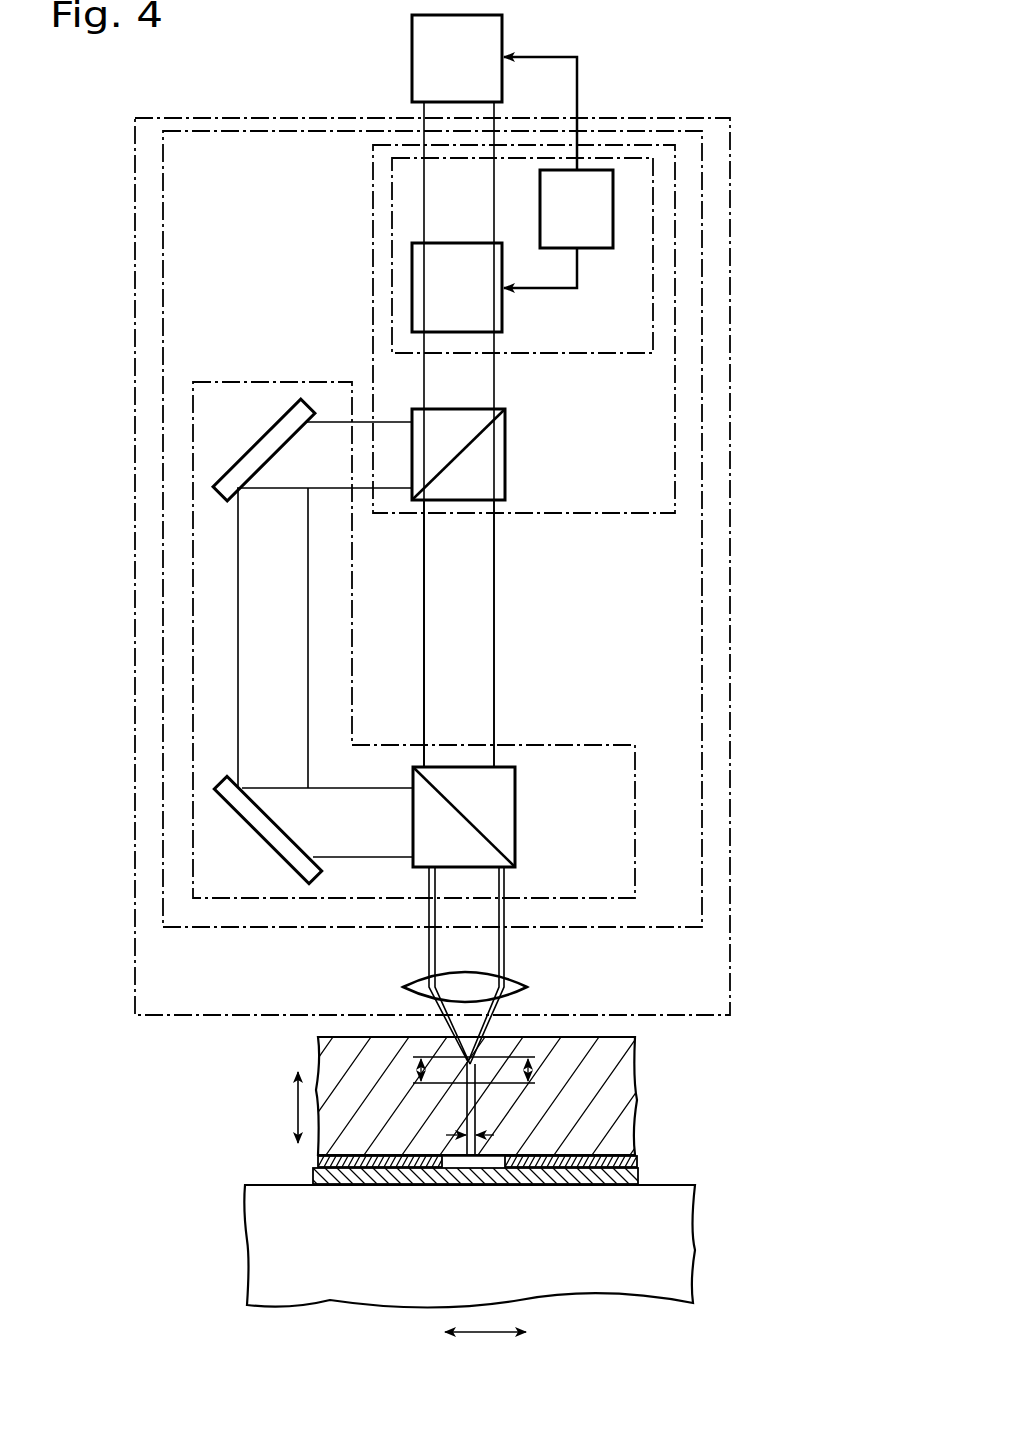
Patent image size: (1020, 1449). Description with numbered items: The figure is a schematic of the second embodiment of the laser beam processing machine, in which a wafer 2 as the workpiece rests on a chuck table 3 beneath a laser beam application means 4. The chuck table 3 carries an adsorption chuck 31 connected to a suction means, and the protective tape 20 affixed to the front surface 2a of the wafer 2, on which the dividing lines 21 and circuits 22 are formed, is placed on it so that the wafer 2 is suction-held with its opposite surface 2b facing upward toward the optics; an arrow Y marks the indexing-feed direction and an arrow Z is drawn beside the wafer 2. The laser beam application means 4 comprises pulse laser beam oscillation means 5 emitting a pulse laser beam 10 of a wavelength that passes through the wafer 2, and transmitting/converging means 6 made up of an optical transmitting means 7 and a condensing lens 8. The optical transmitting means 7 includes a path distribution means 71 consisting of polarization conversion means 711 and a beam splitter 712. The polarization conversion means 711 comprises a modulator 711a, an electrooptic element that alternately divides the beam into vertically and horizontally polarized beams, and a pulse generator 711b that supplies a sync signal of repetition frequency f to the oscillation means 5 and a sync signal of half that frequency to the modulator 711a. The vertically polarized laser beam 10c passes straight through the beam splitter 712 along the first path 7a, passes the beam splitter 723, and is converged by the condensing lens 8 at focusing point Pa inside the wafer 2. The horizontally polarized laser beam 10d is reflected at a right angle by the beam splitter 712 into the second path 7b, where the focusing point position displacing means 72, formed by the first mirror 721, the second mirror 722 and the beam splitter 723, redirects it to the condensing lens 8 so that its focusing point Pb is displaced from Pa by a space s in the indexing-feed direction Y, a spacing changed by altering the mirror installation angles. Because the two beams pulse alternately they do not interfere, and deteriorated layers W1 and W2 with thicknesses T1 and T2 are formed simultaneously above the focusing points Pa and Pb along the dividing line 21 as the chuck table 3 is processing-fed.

The wafer 2 is at (623, 1092).
The front surface 2a is at (623, 1185).
The front surface of wafer 2b is at (610, 1035).
The chuck table 3 is at (243, 1243).
The adsorption chuck 31 is at (670, 1183).
The laser beam application means 4 is at (763, 83).
The pulse laser beam oscillation means 5 is at (412, 47).
The transmitting/converging means 6 is at (732, 418).
The optical transmitting means 7 is at (700, 350).
The first path 7a is at (512, 590).
The second path 7b is at (325, 588).
The condensing lens 8 is at (512, 985).
The pulse laser beam 10 is at (424, 188).
The vertically polarized laser beam 10c is at (424, 595).
The horizontally polarized laser beam 10d is at (328, 490).
The protective tape 20 is at (443, 1204).
The dividing lines 21 is at (475, 1168).
The circuit 22 is at (383, 1187).
The path distribution means 71 is at (673, 212).
The polarization conversion means 711 is at (650, 272).
The modulator 711a is at (412, 293).
The pulse generator 711b is at (613, 195).
The beam splitter 712 is at (507, 437).
The focusing point position displacing means 72 is at (247, 380).
The first mirror 721 is at (257, 440).
The second mirror 722 is at (260, 837).
The beam splitter 723 is at (517, 797).
The thickness T1 is at (460, 1070).
The thickness T2 is at (550, 1072).
The deteriorated layer W1 is at (463, 1070).
The deteriorated layer W2 is at (473, 1067).
The focusing point Pa is at (463, 1083).
The focusing point Pb is at (473, 1077).
The space s is at (464, 1134).
The Z direction (focal point adjustment) Z is at (285, 1107).
The indexing-feed direction Y is at (485, 1350).